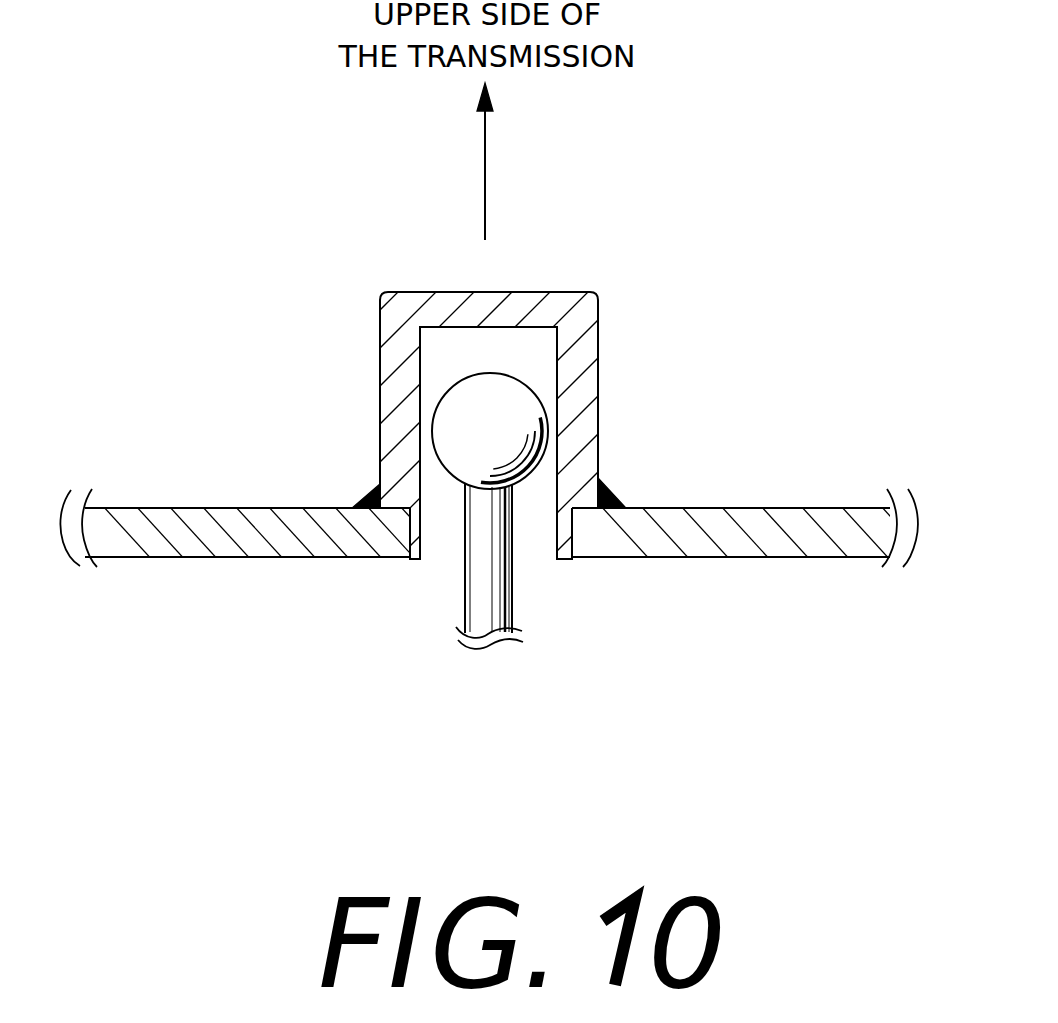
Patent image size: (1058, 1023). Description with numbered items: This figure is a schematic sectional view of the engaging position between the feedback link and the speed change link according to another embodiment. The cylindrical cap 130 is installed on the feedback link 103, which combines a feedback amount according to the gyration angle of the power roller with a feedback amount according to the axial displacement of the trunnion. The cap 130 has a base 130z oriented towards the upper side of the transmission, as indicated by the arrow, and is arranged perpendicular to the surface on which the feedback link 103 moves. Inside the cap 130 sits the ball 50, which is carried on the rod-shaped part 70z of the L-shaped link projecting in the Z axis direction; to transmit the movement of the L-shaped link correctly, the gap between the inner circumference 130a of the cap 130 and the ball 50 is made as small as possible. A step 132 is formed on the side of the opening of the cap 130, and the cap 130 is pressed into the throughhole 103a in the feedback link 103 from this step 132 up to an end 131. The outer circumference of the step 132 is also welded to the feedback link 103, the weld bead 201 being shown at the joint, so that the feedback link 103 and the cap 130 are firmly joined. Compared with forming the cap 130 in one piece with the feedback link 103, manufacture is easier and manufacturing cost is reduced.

The cylindrical cap 130 is at (605, 359).
The base 130z is at (403, 292).
The inner circumference 130a is at (427, 533).
The end 131 is at (415, 560).
The step 132 is at (603, 558).
The feedback link 103 is at (846, 562).
The throughhole 103a is at (412, 507).
The weld bead 201 is at (606, 496).
The ball 50 is at (445, 418).
The rod-shaped part 70z is at (512, 594).